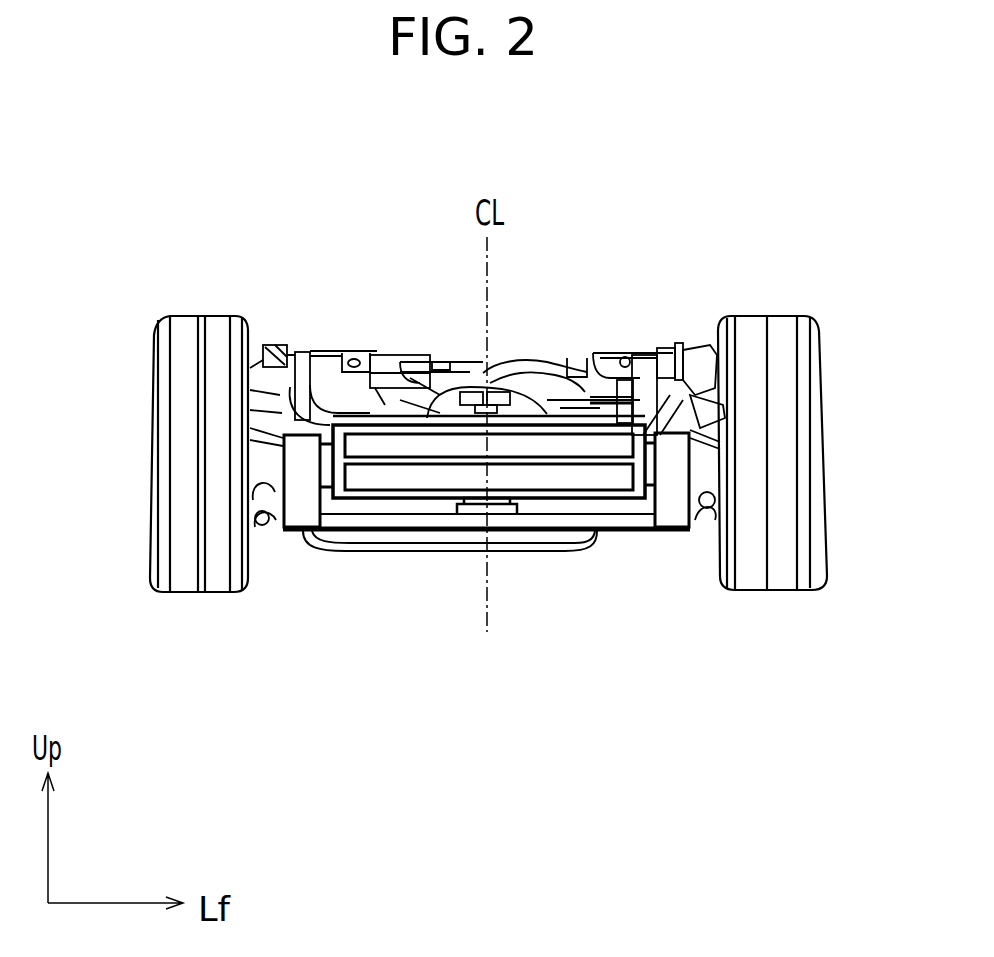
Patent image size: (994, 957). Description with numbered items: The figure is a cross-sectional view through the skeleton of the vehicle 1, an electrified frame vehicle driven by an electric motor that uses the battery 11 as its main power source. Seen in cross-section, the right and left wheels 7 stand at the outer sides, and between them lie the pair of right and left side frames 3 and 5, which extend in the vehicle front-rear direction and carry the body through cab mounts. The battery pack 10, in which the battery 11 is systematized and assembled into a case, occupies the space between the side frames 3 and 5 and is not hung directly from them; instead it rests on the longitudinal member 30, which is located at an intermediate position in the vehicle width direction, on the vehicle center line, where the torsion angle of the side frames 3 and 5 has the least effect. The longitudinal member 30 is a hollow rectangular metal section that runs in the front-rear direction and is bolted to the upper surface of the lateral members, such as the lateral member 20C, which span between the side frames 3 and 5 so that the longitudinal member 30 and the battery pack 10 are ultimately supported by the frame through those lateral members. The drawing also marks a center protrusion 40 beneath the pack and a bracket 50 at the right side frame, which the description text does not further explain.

The vehicle 1 is at (530, 281).
The side frame 3 is at (677, 453).
The side frame 5 is at (298, 456).
The wheel 7 is at (192, 332).
The battery pack 10 is at (365, 362).
The battery 11 is at (540, 475).
The lateral member 20C is at (355, 547).
The longitudinal member 30 is at (445, 537).
The center protrusion 40 is at (512, 517).
The bracket 50 is at (648, 452).